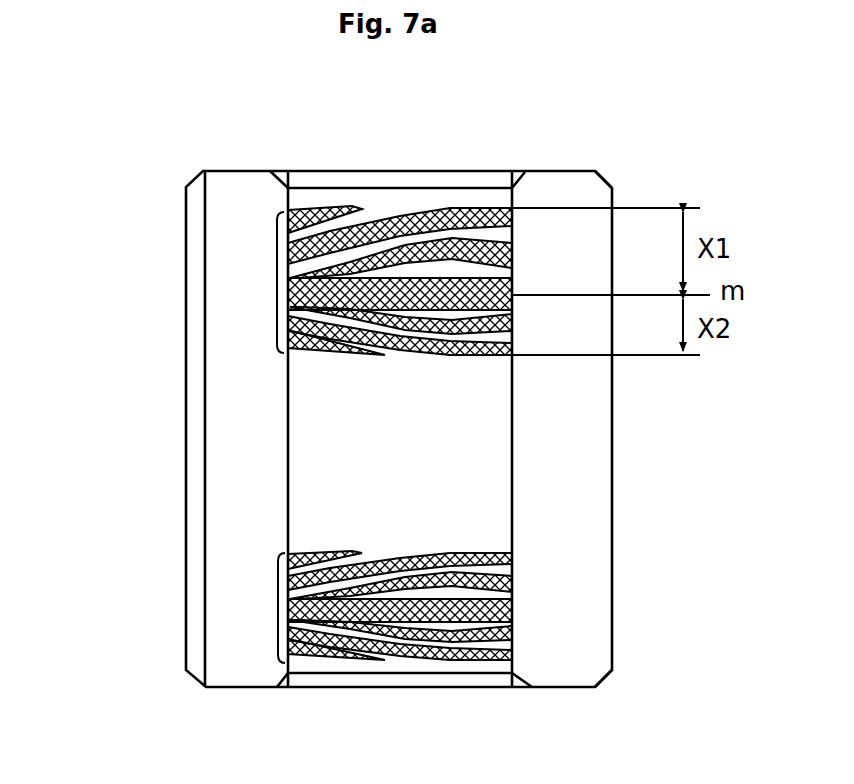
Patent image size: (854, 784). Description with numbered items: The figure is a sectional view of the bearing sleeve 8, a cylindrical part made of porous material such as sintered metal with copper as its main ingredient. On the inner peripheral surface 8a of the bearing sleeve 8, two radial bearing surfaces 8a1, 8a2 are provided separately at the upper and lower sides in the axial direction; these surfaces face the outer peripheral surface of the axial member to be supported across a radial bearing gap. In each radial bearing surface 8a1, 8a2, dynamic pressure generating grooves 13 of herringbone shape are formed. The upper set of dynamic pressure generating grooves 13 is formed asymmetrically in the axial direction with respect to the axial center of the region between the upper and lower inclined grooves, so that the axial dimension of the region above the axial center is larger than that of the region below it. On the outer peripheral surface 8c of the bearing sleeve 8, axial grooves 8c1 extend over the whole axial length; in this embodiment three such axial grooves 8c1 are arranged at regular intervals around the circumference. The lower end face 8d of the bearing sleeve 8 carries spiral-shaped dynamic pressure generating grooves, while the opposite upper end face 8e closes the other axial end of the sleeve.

The bearing sleeve 8 is at (180, 163).
The inner peripheral surface 8a is at (516, 433).
The radial bearing surface 8a1 is at (262, 288).
The radial bearing surface 8a2 is at (262, 612).
The outer peripheral surface 8c is at (186, 398).
The axial groove 8c1 is at (205, 457).
The lower end face 8d is at (565, 690).
The top frame member 8e is at (547, 170).
The dynamic pressure generating groove 13 is at (345, 220).